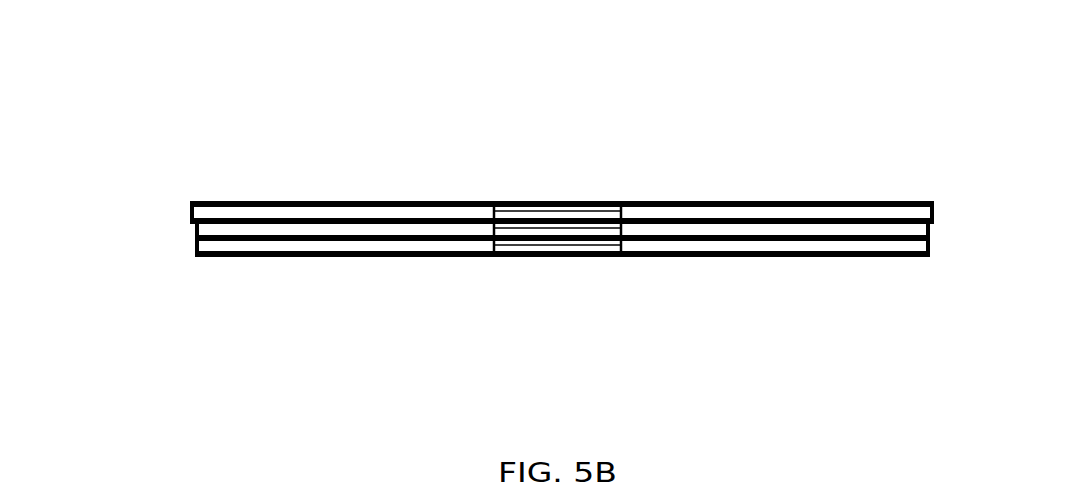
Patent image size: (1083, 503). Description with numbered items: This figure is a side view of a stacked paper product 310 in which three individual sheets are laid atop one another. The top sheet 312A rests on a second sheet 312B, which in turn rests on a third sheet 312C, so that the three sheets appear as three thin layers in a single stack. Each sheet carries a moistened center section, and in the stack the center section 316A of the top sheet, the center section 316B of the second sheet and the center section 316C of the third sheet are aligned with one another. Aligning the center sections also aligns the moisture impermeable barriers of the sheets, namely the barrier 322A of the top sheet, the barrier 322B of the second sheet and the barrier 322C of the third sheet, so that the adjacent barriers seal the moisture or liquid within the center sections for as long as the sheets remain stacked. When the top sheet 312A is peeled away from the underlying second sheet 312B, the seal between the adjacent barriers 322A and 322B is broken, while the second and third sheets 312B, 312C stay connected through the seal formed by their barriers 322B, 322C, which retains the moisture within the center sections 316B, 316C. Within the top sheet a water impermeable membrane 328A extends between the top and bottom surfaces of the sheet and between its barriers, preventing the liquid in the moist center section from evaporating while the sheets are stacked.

The stacked paper product 310 is at (263, 165).
The top sheet 312A is at (193, 212).
The second sheet 312B is at (197, 230).
The third sheet 312C is at (196, 255).
The center section 316A is at (510, 211).
The center section 316B is at (577, 228).
The center section 316C is at (580, 255).
The moisture impermeable barrier 322A is at (493, 207).
The moisture impermeable barrier 322B is at (493, 239).
The moisture impermeable barrier 322C is at (500, 255).
The water impermeable membrane 328A is at (542, 205).